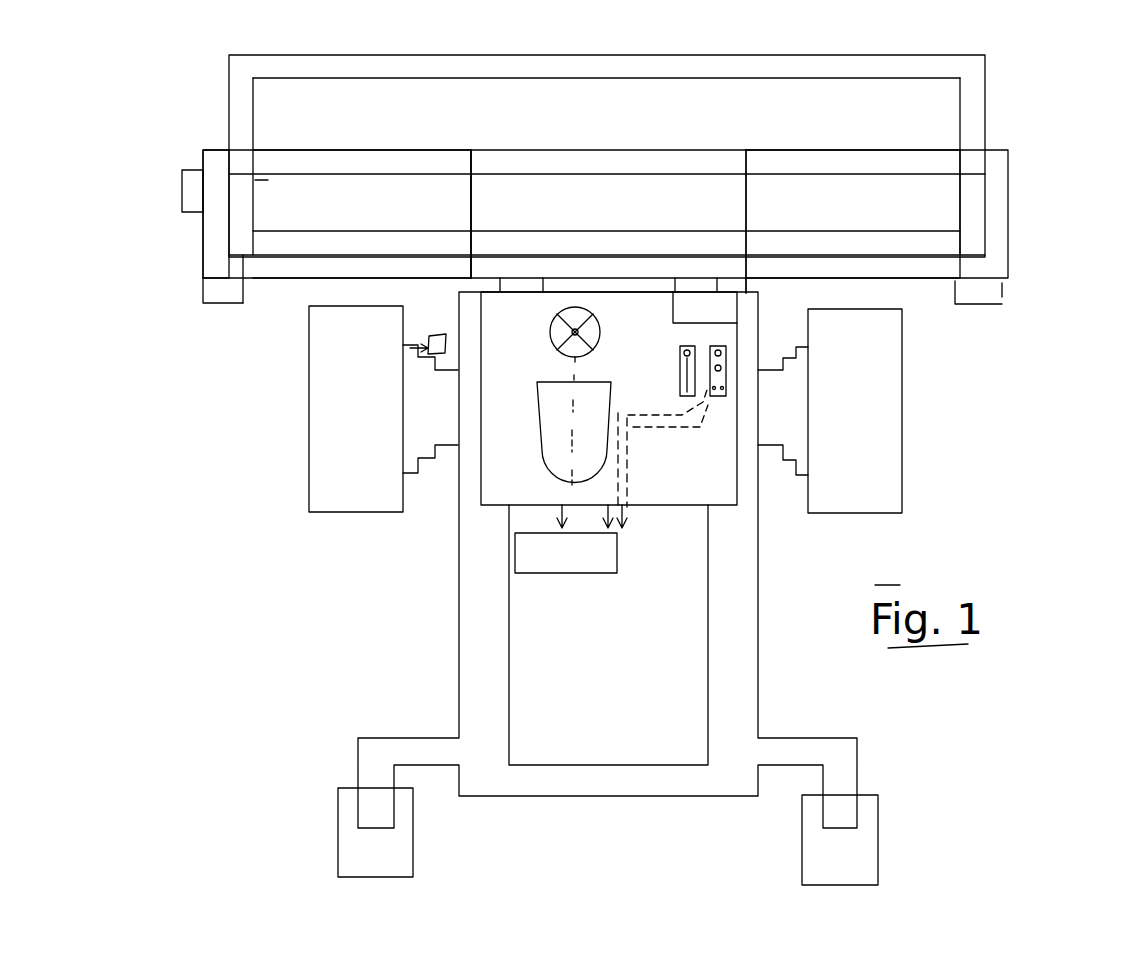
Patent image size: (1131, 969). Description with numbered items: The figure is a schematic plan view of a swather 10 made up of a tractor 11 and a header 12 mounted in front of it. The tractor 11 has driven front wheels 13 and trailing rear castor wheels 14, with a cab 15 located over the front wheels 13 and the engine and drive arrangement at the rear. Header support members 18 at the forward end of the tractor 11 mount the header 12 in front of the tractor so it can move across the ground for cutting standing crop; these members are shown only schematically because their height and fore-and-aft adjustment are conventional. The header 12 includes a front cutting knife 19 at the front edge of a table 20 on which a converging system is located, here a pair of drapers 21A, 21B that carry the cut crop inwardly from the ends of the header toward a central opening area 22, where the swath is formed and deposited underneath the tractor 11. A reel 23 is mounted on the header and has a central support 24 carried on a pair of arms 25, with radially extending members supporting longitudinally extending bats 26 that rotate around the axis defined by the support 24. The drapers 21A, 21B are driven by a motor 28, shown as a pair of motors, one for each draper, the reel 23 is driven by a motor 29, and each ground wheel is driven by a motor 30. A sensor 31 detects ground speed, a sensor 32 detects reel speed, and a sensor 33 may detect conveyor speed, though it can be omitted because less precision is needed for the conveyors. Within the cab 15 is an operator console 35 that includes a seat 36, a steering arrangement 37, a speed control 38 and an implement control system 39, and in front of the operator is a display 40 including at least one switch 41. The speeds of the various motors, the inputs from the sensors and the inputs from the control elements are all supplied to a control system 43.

The swather 10 is at (966, 436).
The tractor 11 is at (737, 622).
The header 12 is at (1035, 201).
The driven front wheels 13 is at (893, 378).
The trailing rear castor wheels 14 is at (862, 815).
The cab 15 is at (636, 481).
The header support members 18 is at (518, 285).
The front cutting knife 19 is at (594, 122).
The table 20 is at (669, 199).
The draper 21A is at (367, 203).
The draper 21B is at (797, 202).
The central opening area 22 is at (615, 192).
The reel 23 is at (527, 70).
The central support 24 is at (342, 118).
The arms 25 is at (208, 158).
The bats 26 is at (413, 63).
The motor 28 is at (222, 290).
The motor 29 is at (182, 192).
The motor 30 is at (410, 473).
The sensor 31 is at (447, 337).
The sensor 32 is at (268, 186).
The sensor 33 is at (237, 263).
The operator console 35 is at (640, 442).
The seat 36 is at (547, 437).
The steering arrangement 37 is at (592, 332).
The speed control 38 is at (680, 370).
The implement control system 39 is at (718, 397).
The display 40 is at (720, 312).
The switch 41 is at (692, 313).
The control system 43 is at (570, 573).